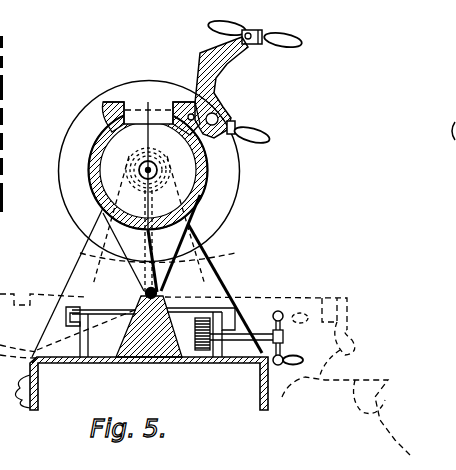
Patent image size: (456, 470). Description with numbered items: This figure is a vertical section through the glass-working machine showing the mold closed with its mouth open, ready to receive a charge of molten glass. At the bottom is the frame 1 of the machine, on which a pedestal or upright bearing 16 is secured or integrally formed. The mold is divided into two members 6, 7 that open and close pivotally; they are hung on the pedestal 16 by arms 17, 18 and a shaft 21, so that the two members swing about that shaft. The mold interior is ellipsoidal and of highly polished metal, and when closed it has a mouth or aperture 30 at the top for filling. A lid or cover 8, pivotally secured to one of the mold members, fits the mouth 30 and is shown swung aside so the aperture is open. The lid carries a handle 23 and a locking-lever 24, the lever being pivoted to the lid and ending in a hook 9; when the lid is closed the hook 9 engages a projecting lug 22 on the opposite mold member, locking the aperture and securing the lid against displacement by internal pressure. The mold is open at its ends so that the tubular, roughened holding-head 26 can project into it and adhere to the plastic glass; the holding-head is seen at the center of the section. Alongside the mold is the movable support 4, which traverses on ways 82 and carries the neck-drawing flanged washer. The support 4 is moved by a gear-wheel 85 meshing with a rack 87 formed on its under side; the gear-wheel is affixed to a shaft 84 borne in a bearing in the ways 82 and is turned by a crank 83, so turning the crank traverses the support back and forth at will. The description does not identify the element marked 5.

The frame 1 is at (0, 398).
The movable support 4 is at (168, 292).
The leg 5 is at (212, 248).
The mold member 6 is at (88, 177).
The mold member 7 is at (206, 188).
The lid or cover 8 is at (218, 77).
The hook 9 is at (209, 26).
The pedestal or upright bearing 16 is at (128, 358).
The arms 17 is at (123, 252).
The arms 18 is at (161, 261).
The shaft 21 is at (146, 292).
The projecting lug 22 is at (107, 108).
The handle 23 is at (269, 137).
The locking-lever 24 is at (299, 39).
The holding-head 26 is at (132, 160).
The mouth or aperture 30 is at (138, 106).
The ways 82 is at (240, 362).
The crank 83 is at (305, 312).
The shaft 84 is at (278, 311).
The gear-wheel 85 is at (184, 360).
The rack 87 is at (236, 310).